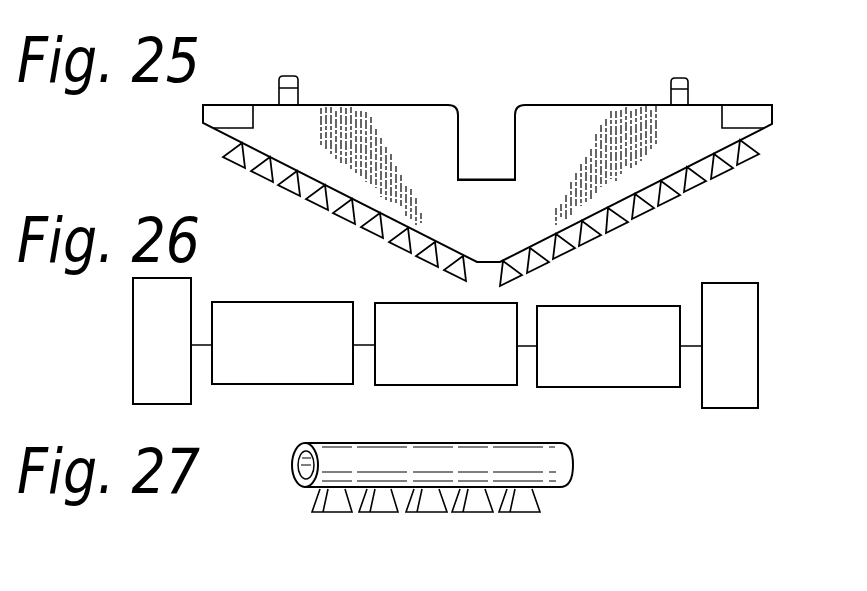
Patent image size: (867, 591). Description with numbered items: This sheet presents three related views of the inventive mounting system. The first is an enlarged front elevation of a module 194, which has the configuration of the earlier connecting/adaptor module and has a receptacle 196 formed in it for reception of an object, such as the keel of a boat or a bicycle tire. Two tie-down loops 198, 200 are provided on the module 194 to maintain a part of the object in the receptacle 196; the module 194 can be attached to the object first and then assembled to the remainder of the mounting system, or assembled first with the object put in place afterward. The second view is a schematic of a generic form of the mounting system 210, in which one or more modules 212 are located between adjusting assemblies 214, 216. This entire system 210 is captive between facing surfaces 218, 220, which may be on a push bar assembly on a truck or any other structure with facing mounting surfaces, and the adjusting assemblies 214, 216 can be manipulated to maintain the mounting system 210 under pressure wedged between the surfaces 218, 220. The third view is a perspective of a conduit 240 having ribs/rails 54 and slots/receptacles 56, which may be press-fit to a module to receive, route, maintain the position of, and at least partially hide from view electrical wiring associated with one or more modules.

In FIG. 25, the module 194 is at (573, 157).
In FIG. 25, the receptacle 196 is at (461, 140).
In FIG. 25, the tie-down loop 198 is at (288, 76).
In FIG. 25, the tie-down loop 200 is at (690, 82).
In FIG. 26, the mounting system 210 is at (621, 288).
In FIG. 26, the modules 212 is at (454, 339).
In FIG. 26, the adjusting assembly 214 is at (291, 324).
In FIG. 26, the adjusting assembly 216 is at (615, 327).
In FIG. 26, the facing surface 218 is at (176, 356).
In FIG. 26, the facing surface 220 is at (744, 358).
In FIG. 27, the conduit 240 is at (510, 445).
In FIG. 27, the ribs/rails 54 is at (385, 512).
In FIG. 27, the slots/receptacles 56 is at (458, 512).